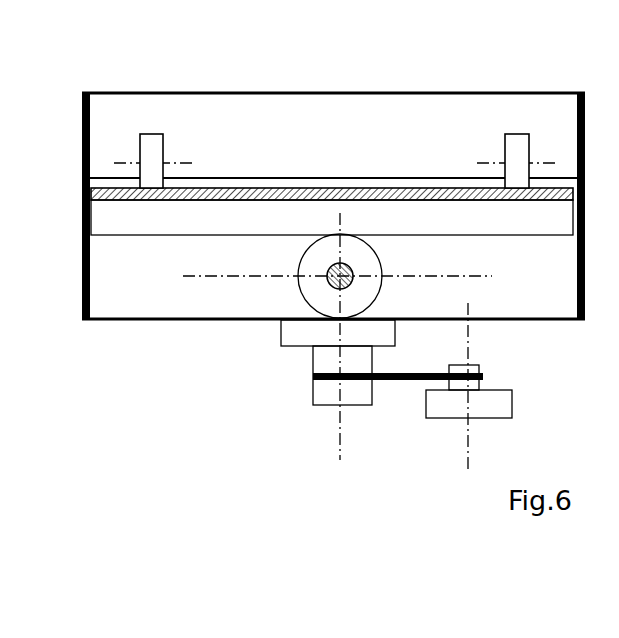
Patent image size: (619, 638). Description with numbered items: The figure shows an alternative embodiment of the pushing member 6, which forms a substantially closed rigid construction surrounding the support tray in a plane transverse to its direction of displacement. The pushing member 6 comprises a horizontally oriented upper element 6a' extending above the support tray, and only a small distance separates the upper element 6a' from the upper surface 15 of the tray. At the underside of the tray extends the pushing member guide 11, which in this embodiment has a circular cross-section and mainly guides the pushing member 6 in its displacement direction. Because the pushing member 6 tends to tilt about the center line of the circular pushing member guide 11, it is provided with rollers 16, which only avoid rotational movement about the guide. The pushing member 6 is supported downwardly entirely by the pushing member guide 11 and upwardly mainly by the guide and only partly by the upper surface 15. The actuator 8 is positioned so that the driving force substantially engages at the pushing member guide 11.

The pushing member 6 is at (395, 94).
The upper element 6a' is at (333, 103).
The upper surface 15 is at (315, 190).
The rollers 16 is at (150, 148).
The pushing member guide 11 is at (326, 283).
The actuator 8 is at (507, 402).